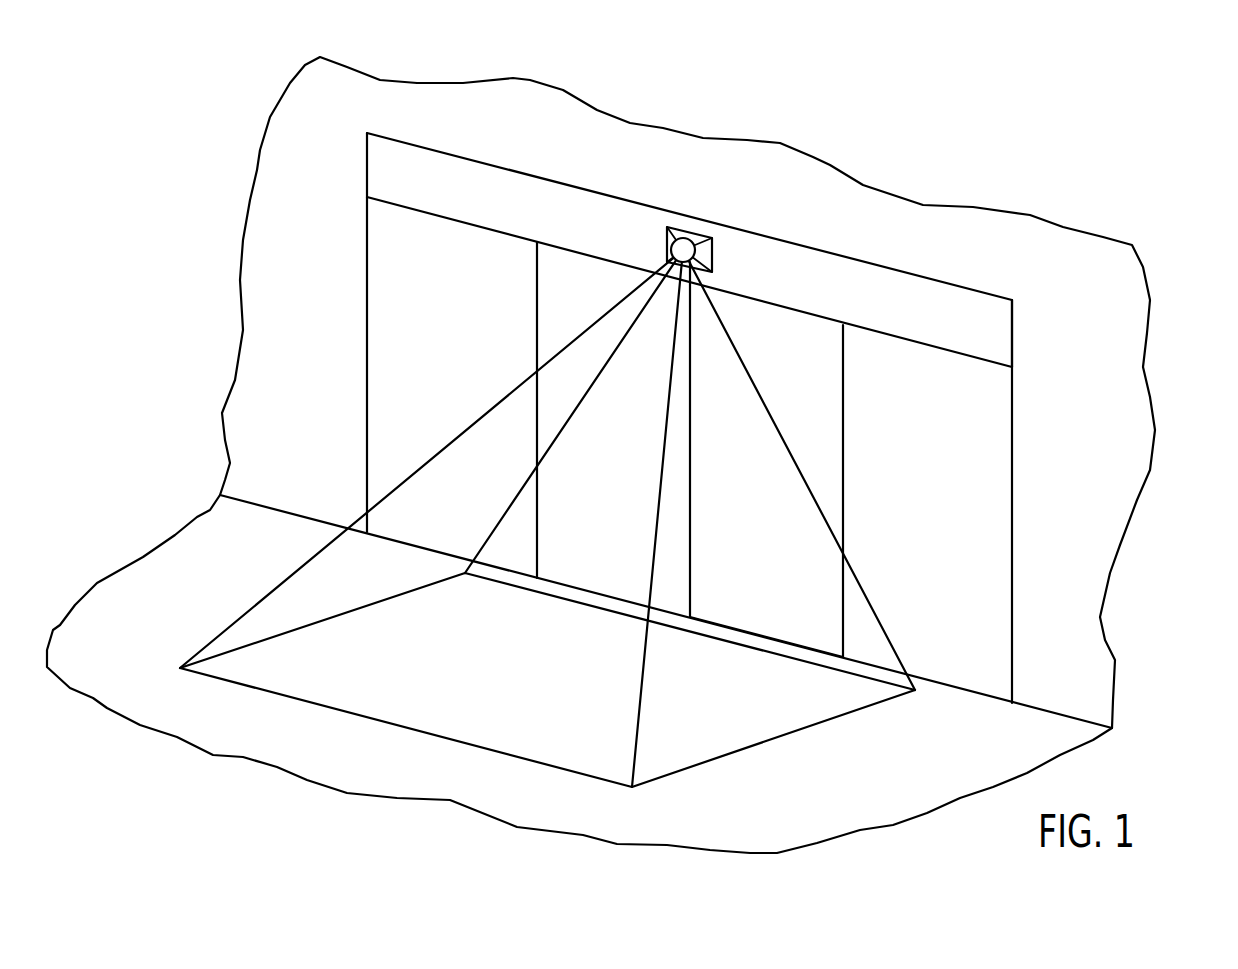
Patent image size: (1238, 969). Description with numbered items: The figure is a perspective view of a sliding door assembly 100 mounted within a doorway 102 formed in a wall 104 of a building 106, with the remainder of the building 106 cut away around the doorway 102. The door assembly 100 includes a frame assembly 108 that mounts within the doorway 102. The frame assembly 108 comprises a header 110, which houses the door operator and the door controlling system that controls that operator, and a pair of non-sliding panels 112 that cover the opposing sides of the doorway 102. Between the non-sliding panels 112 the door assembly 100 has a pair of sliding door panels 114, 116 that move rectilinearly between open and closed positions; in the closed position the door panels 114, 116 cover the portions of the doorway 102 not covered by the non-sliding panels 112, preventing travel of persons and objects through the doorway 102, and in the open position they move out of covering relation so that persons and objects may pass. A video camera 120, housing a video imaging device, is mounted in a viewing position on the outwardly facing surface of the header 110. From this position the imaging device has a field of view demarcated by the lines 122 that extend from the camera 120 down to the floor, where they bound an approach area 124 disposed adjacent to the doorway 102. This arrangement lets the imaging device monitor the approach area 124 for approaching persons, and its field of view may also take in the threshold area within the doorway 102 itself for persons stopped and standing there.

The sliding door assembly 100 is at (925, 228).
The doorway 102 is at (1013, 432).
The wall 104 is at (1098, 280).
The building 106 is at (1127, 318).
The frame assembly 108 is at (792, 222).
The header 110 is at (555, 212).
The non-sliding panels 112 is at (408, 355).
The sliding door panel 114 is at (632, 488).
The sliding door panel 116 is at (782, 518).
The video camera 120 is at (692, 237).
The lines 122 is at (427, 468).
The approach area 124 is at (770, 718).